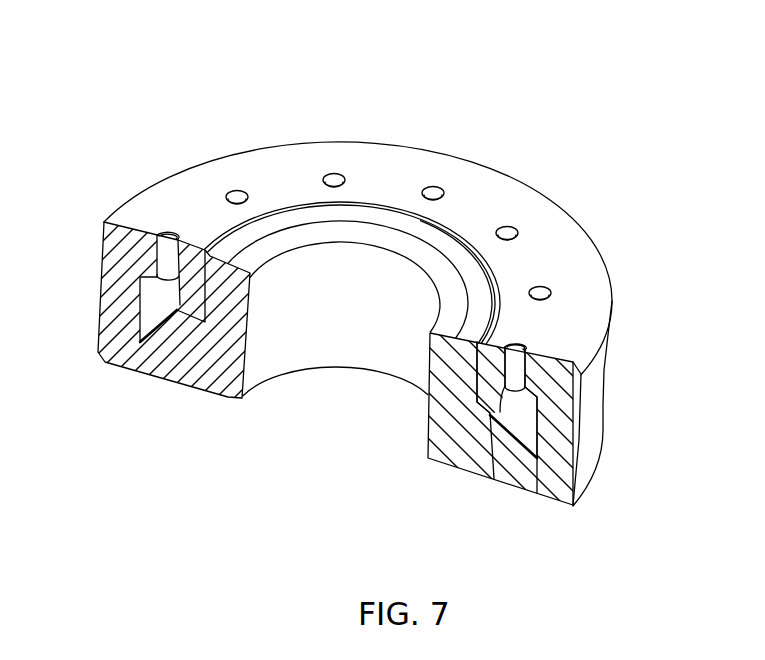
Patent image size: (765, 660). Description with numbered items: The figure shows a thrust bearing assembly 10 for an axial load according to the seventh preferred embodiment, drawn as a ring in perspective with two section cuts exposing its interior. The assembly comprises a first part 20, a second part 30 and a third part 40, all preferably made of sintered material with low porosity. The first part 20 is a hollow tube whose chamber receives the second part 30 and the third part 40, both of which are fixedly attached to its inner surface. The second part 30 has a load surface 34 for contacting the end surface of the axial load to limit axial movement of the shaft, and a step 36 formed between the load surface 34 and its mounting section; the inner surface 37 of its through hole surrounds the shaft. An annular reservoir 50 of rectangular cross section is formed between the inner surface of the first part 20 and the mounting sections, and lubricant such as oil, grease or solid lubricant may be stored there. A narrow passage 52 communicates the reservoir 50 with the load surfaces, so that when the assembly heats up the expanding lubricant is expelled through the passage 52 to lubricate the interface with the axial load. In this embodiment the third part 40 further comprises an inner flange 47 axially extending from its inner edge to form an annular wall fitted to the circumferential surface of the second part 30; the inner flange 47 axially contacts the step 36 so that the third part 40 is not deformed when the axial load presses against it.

The thrust bearing assembly 10 is at (131, 117).
The first part 20 is at (450, 238).
The third part 40 is at (547, 257).
The load surface 34 is at (413, 230).
The narrow passage 52 is at (507, 223).
The inner surface 37 is at (292, 328).
The second part 30 is at (472, 437).
The inner flange 47 is at (488, 372).
The step 36 is at (498, 438).
The annular reservoir 50 is at (525, 422).